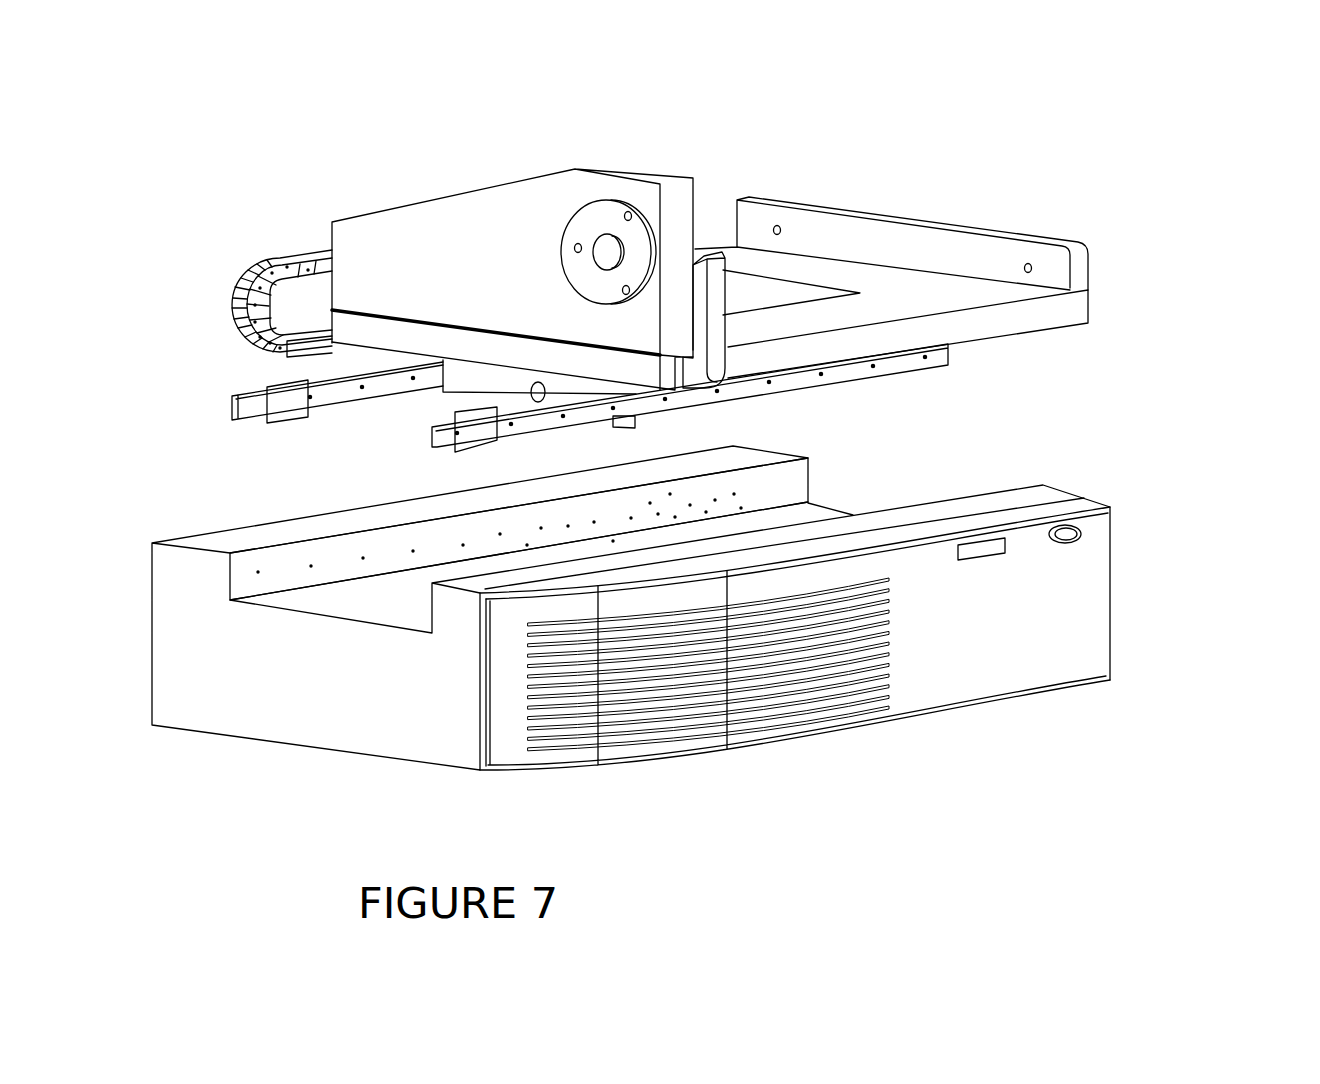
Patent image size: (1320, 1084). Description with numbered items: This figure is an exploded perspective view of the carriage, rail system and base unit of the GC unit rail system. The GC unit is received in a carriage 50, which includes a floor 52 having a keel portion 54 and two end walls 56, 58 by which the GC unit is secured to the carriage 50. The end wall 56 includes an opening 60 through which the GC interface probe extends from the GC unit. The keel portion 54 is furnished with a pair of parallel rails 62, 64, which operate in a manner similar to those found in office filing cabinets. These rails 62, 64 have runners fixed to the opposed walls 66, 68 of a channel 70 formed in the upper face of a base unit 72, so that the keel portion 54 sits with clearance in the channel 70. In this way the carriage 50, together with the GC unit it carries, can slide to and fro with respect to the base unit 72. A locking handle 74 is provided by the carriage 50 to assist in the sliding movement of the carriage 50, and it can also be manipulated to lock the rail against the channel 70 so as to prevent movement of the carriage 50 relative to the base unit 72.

The carriage 50 is at (1127, 316).
The floor 52 is at (902, 292).
The keel portion 54 is at (468, 380).
The end wall 56 is at (458, 277).
The end wall 58 is at (870, 238).
The opening 60 is at (590, 222).
The rail 62 is at (258, 403).
The rail 64 is at (507, 427).
The wall 66 is at (270, 565).
The wall 68 is at (418, 598).
The channel 70 is at (833, 505).
The base unit 72 is at (974, 637).
The locking handle 74 is at (717, 270).